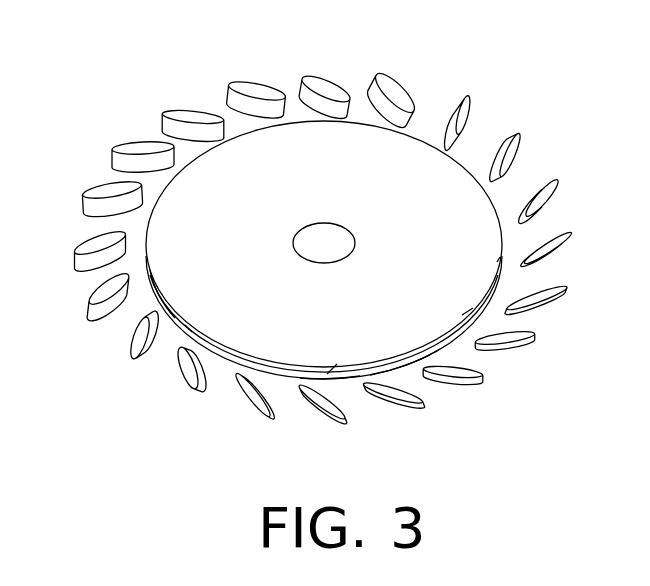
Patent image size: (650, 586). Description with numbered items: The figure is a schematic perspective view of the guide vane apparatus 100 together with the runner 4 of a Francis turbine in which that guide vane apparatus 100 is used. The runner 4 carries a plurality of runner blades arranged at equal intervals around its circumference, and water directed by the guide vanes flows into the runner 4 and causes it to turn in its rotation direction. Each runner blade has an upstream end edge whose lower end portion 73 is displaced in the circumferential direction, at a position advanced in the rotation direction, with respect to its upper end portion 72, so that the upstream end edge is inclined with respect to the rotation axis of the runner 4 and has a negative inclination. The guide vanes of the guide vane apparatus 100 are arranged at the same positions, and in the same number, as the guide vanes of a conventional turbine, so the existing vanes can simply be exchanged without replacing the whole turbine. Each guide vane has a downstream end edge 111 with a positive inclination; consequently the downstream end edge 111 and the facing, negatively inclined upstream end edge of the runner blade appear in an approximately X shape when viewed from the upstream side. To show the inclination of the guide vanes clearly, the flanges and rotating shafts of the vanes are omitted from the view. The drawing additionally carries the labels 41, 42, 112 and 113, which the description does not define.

The runner 4 is at (362, 118).
The rotary disc 41 is at (412, 197).
The peripheral guide portion 42 is at (413, 365).
The upper end portion 72 is at (400, 350).
The lower end portion 73 is at (330, 373).
The guide vane apparatus 100 is at (235, 373).
The downstream end edge 111 is at (157, 317).
The tablet side surface 112 is at (123, 320).
The tablet end surface 113 is at (157, 327).